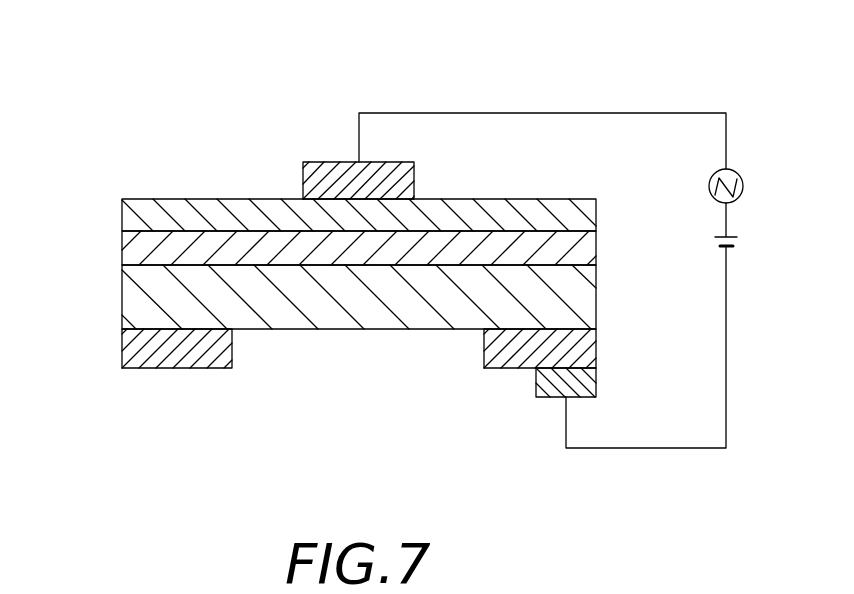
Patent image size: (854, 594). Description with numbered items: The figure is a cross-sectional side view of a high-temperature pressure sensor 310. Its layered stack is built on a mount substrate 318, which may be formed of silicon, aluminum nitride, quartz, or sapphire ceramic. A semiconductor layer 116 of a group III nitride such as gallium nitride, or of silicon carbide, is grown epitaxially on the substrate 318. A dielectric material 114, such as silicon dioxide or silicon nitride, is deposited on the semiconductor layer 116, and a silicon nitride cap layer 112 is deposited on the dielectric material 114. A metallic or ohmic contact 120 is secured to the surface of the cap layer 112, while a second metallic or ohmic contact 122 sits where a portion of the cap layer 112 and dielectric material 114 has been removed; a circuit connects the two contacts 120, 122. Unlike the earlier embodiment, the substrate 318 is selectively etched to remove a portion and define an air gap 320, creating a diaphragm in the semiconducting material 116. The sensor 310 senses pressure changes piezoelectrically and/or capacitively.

The high-temperature pressure sensor 310 is at (213, 114).
The silicon nitride cap layer 112 is at (583, 218).
The dielectric material 114 is at (596, 255).
The semiconductor layer 116 is at (135, 301).
The metallic or ohmic contact 120 is at (393, 176).
The metallic or ohmic contact 122 is at (587, 390).
The mount substrate 318 is at (188, 361).
The air gap 320 is at (330, 378).